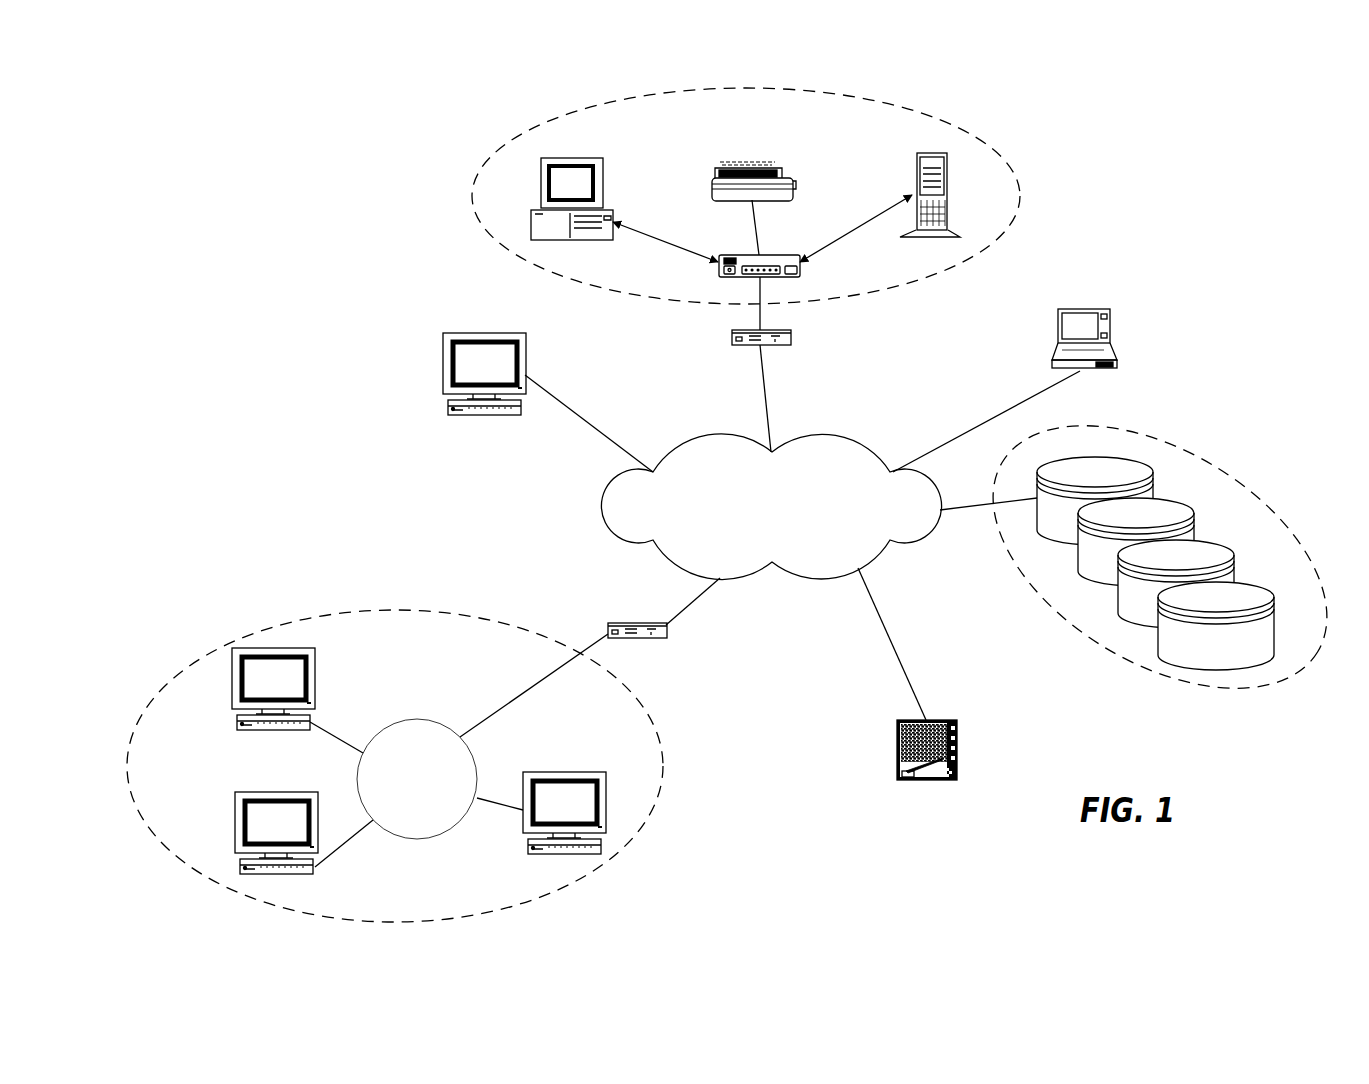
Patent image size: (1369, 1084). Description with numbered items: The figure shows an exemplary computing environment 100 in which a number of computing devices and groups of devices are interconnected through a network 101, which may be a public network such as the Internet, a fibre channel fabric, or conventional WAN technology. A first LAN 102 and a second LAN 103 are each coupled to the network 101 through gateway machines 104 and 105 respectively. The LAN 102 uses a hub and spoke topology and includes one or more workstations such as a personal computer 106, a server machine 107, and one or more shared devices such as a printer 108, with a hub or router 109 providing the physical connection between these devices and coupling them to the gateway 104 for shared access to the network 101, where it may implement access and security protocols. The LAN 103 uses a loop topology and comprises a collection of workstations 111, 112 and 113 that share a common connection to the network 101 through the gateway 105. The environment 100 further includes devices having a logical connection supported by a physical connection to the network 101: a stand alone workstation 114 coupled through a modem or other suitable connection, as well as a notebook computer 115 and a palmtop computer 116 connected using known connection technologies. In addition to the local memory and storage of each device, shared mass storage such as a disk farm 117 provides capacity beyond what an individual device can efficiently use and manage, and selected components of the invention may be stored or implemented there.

The computing environment 100 is at (330, 182).
The network 101 is at (616, 494).
The LAN 102 is at (490, 172).
The LAN 103 is at (418, 612).
The gateway machine 104 is at (744, 351).
The gateway machine 105 is at (622, 622).
The personal computer 106 is at (605, 157).
The server machine 107 is at (915, 158).
The printer 108 is at (752, 162).
The hub or router 109 is at (778, 252).
The workstation 111 is at (326, 667).
The workstation 112 is at (262, 792).
The workstation 113 is at (566, 771).
The stand alone workstation 114 is at (462, 342).
The notebook computer 115 is at (1084, 308).
The palmtop computer 116 is at (900, 720).
The disk farm 117 is at (1152, 442).